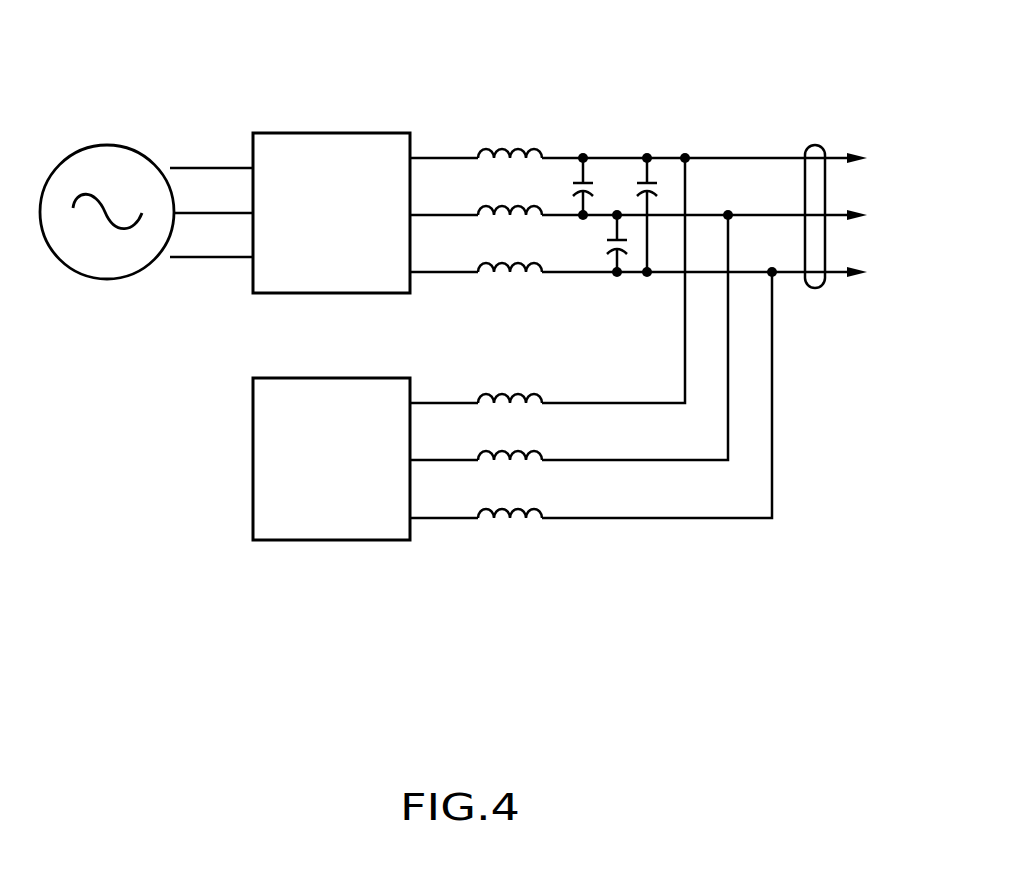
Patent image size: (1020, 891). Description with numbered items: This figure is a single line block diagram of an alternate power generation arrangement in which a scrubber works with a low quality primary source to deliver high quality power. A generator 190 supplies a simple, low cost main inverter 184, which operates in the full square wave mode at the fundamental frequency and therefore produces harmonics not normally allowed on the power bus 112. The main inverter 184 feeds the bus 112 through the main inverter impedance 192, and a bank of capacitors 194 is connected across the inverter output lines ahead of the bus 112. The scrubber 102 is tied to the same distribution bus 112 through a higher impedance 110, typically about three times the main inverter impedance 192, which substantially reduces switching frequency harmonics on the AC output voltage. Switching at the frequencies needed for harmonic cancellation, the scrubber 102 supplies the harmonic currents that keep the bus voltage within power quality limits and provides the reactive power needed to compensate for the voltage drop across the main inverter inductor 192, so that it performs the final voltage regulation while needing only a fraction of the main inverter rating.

The generator 190 is at (108, 144).
The main inverter 184 is at (338, 133).
The main inverter impedance 192 is at (507, 108).
The filter capacitors 194 is at (617, 126).
The power bus 112 is at (810, 145).
The scrubber 102 is at (336, 540).
The higher impedance 110 is at (513, 562).